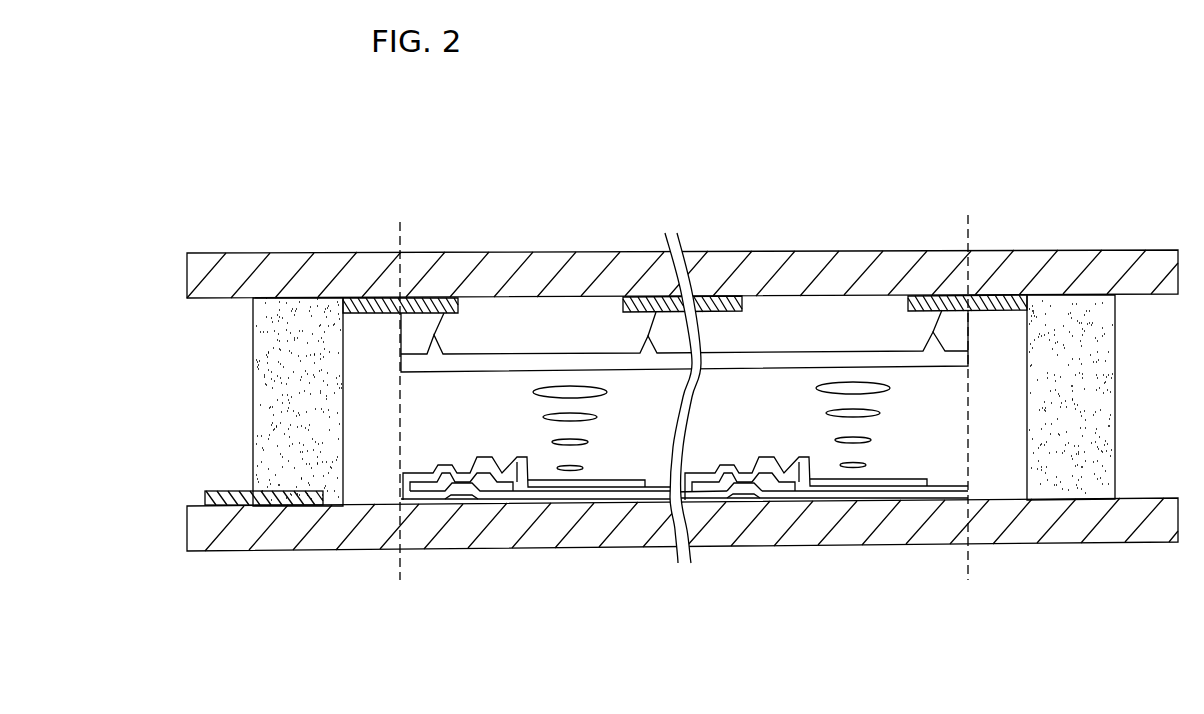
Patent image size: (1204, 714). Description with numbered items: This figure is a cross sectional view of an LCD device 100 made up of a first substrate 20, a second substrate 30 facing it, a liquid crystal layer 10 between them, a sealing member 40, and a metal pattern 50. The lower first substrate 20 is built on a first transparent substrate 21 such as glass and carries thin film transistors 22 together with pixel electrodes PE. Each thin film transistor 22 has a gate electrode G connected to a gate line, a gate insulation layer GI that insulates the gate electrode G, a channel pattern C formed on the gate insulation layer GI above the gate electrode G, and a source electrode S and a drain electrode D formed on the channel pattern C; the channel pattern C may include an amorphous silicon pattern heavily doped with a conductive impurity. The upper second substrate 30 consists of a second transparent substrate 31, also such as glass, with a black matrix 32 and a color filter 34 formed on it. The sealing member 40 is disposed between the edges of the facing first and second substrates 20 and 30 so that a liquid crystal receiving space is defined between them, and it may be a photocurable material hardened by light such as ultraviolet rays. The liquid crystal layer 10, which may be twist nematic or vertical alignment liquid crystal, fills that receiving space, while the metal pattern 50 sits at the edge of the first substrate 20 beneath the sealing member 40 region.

The LCD device 100 is at (682, 366).
The second substrate 30 is at (682, 267).
The second transparent substrate 31 is at (625, 268).
The black matrix 32 is at (462, 300).
The color filter 34 is at (822, 310).
The sealing member 40 is at (278, 383).
The metal pattern 50 is at (233, 495).
The first substrate 20 is at (682, 507).
The first transparent substrate 21 is at (454, 540).
The thin film transistor 22 is at (820, 482).
The liquid crystal layer 10 is at (572, 478).
The source electrode S is at (710, 485).
The drain electrode D is at (787, 485).
The pixel electrode PE is at (909, 478).
The channel pattern C is at (715, 492).
The gate electrode G is at (747, 500).
The gate insulation layer GI is at (786, 498).